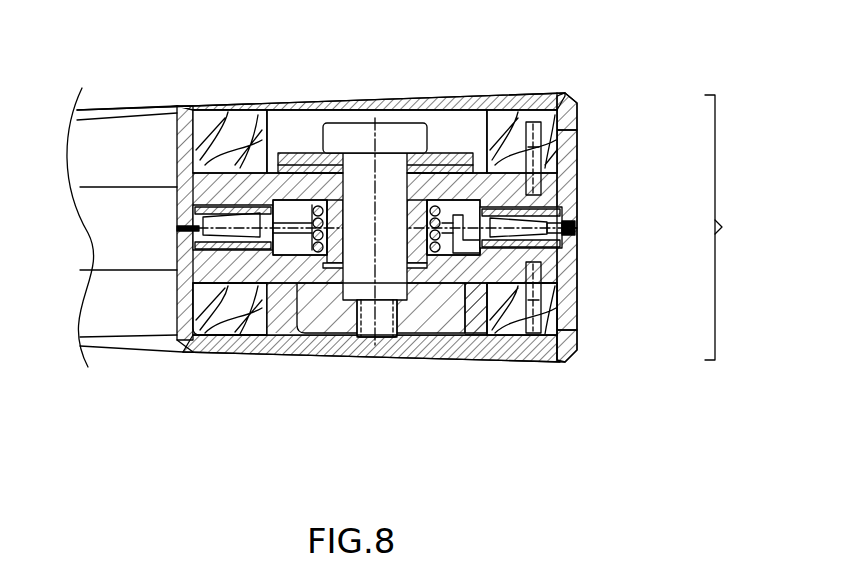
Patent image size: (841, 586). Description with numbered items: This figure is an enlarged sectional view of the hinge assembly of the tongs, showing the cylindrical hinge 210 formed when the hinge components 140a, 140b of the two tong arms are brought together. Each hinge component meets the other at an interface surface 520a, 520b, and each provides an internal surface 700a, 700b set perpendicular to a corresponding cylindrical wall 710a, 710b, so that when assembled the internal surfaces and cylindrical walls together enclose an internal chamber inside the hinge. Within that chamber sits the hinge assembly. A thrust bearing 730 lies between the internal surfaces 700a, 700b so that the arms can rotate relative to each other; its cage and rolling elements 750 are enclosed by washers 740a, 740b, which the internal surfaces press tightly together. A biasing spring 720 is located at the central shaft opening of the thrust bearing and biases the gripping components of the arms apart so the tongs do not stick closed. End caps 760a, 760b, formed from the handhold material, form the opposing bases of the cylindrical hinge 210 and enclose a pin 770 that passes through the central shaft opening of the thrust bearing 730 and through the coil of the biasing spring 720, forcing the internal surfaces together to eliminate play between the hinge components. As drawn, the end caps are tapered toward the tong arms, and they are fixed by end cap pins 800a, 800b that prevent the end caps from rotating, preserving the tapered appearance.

The cylindrical hinge 210 is at (743, 227).
The hinge component 140a is at (573, 193).
The hinge component 140b is at (570, 310).
The interface surface 520a is at (570, 223).
The interface surface 520b is at (570, 237).
The internal surface 700a is at (507, 207).
The internal surface 700b is at (560, 275).
The cylindrical wall 710a is at (577, 103).
The cylindrical wall 710b is at (577, 356).
The biasing spring 720 is at (367, 268).
The thrust bearing 730 is at (177, 270).
The washer 740a is at (567, 187).
The washer 740b is at (497, 320).
The rolling elements 750 is at (490, 247).
The end cap 760a is at (497, 100).
The end cap 760b is at (412, 353).
The pin 770 is at (340, 330).
The end cap pin 800a is at (553, 110).
The end cap pin 800b is at (543, 350).